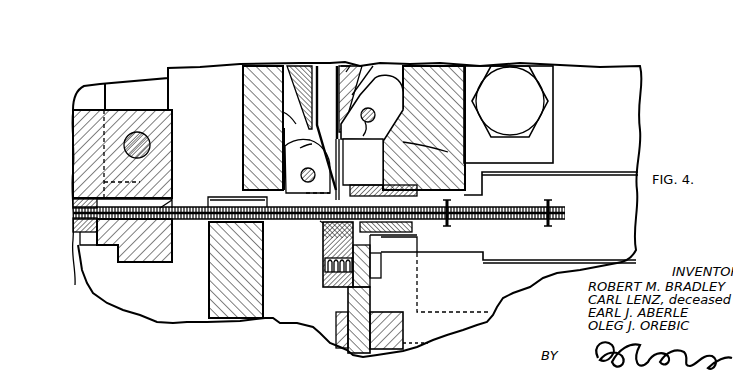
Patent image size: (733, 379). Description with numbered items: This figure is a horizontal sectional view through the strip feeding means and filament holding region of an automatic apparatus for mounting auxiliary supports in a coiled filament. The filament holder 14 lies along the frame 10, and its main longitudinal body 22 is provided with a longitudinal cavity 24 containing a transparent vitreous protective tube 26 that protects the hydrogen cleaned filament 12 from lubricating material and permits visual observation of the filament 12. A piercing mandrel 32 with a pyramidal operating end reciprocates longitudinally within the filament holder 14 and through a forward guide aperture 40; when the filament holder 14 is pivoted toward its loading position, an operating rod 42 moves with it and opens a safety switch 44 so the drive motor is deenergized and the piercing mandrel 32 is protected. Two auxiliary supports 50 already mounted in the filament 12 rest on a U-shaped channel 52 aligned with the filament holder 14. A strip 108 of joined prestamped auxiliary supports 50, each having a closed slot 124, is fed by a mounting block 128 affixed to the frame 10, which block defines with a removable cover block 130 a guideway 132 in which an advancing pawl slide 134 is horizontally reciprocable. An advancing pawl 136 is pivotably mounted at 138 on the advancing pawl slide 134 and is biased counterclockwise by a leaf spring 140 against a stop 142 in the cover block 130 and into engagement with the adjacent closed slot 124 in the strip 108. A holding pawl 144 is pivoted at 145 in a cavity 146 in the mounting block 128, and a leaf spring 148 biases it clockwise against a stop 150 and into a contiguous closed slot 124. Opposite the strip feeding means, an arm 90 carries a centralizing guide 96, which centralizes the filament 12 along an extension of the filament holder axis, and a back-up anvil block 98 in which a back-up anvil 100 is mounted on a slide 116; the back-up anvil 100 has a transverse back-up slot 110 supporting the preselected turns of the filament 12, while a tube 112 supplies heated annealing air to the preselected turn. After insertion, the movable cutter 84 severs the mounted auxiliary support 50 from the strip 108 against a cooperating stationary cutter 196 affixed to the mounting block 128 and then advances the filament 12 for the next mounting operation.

The frame 10 is at (612, 72).
The filament 12 is at (514, 217).
The filament holder 14 is at (180, 143).
The main longitudinal body 22 is at (140, 262).
The longitudinal cavity 24 is at (92, 236).
The transparent vitreous protective tube 26 is at (70, 270).
The piercing mandrel 32 is at (184, 220).
The forward guide aperture 40 is at (165, 206).
The operating rod 42 is at (140, 135).
The safety switch 44 is at (118, 86).
The auxiliary support 50 is at (449, 223).
The U-shaped channel 52 is at (628, 217).
The movable cutter 84 is at (264, 298).
The arm 90 is at (483, 312).
The centralizing guide 96 is at (417, 253).
The back-up anvil block 98 is at (405, 326).
The back-up anvil 100 is at (323, 243).
The strip 108 is at (344, 66).
The back-up slot 110 is at (330, 204).
The tube 112 is at (323, 225).
The slide 116 is at (347, 300).
The closed slot 124 is at (356, 66).
The mounting block 128 is at (442, 80).
The removable cover block 130 is at (253, 66).
The guideway 132 is at (295, 66).
The advancing pawl slide 134 is at (324, 66).
The advancing pawl 136 is at (293, 172).
The pivot 138 is at (307, 165).
The leaf spring 140 is at (283, 114).
The stop 142 is at (282, 133).
The holding pawl 144 is at (384, 78).
The pivot 145 is at (363, 136).
The cavity 146 is at (448, 152).
The leaf spring 148 is at (376, 66).
The stop 150 is at (402, 92).
The stationary cutter 196 is at (417, 192).